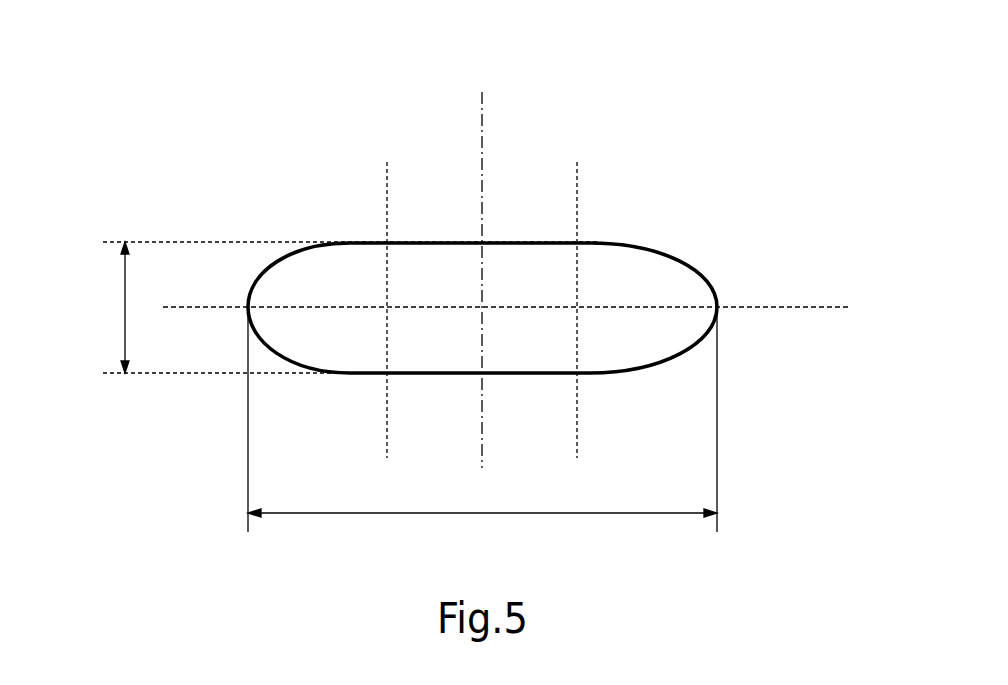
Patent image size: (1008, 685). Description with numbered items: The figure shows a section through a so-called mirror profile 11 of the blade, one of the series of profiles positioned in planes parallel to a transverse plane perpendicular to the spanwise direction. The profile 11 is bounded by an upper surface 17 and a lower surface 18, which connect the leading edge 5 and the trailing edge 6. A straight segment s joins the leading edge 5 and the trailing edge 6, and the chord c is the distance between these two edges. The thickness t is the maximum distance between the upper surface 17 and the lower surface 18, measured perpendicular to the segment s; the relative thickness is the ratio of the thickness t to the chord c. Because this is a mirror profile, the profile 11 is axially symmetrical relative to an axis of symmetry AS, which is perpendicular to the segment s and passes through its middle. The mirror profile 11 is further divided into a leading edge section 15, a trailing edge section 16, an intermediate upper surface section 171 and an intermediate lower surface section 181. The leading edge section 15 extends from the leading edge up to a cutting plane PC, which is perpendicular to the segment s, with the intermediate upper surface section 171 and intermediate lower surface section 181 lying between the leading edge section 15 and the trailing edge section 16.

The profile 11 is at (152, 130).
The leading edge 5 is at (247, 305).
The trailing edge 6 is at (717, 307).
The leading edge section 15 is at (283, 262).
The trailing edge section 16 is at (673, 256).
The upper surface 17 is at (598, 188).
The intermediate upper surface section 171 is at (500, 242).
The lower surface 18 is at (623, 390).
The intermediate lower surface section 181 is at (533, 373).
The axis of symmetry AS is at (482, 118).
The cutting plane PC is at (387, 194).
The segment s is at (628, 305).
The thickness t is at (118, 307).
The chord c is at (482, 419).